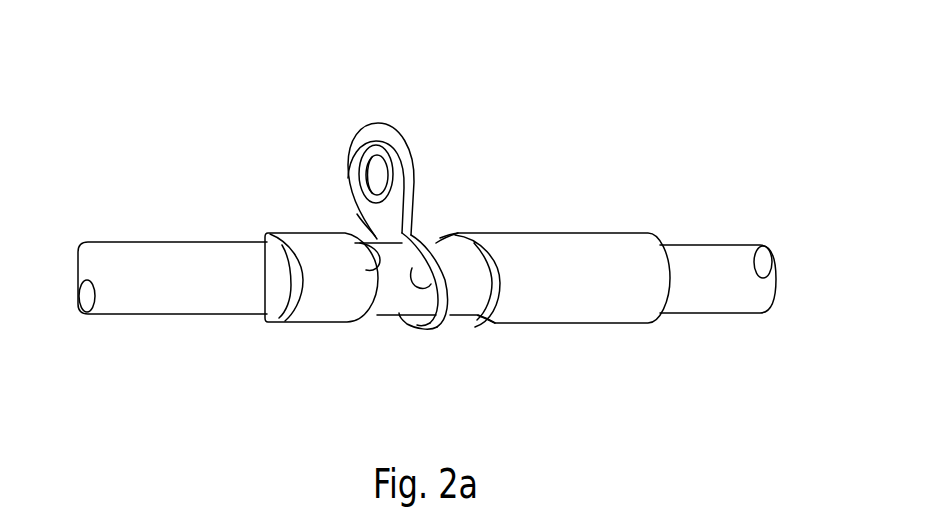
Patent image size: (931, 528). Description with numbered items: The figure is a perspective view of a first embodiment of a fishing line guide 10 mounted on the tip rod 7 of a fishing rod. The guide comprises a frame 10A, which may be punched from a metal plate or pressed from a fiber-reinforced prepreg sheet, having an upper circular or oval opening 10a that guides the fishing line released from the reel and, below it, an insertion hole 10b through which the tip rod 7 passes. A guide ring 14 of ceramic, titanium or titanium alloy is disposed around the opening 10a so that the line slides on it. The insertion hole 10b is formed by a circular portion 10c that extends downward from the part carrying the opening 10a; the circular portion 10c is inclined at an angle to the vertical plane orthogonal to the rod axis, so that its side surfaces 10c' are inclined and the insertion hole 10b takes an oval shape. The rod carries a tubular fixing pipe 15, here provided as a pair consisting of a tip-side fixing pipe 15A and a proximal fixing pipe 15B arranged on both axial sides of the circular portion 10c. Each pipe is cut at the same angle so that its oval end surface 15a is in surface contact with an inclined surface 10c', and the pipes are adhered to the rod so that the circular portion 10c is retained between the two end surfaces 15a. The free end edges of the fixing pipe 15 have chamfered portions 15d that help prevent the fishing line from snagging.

The tip rod 7 is at (722, 298).
The fishing line guide 10 is at (411, 221).
The frame 10A is at (397, 221).
The opening 10a is at (360, 143).
The insertion hole 10b is at (437, 281).
The circular portion 10c is at (454, 331).
The inclined surfaces 10c' is at (407, 373).
The guide ring 14 is at (366, 173).
The fixing pipe 15 is at (432, 277).
The tip-side fixing pipe 15A is at (325, 310).
The proximal fixing pipe 15B is at (613, 247).
The end surface 15a is at (374, 238).
The chamfered portions 15d is at (292, 276).